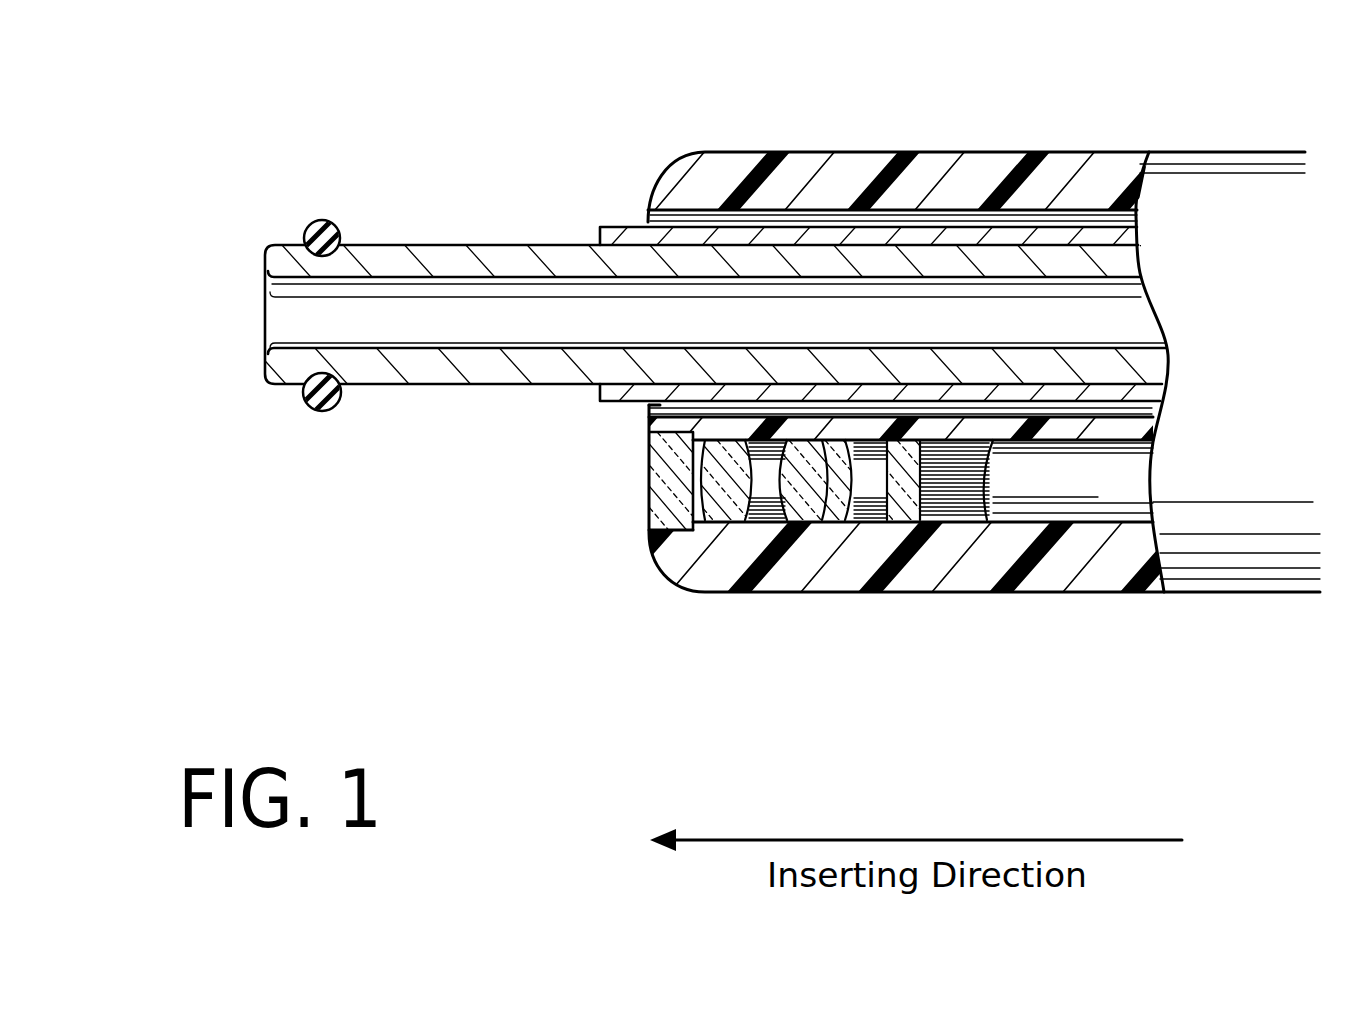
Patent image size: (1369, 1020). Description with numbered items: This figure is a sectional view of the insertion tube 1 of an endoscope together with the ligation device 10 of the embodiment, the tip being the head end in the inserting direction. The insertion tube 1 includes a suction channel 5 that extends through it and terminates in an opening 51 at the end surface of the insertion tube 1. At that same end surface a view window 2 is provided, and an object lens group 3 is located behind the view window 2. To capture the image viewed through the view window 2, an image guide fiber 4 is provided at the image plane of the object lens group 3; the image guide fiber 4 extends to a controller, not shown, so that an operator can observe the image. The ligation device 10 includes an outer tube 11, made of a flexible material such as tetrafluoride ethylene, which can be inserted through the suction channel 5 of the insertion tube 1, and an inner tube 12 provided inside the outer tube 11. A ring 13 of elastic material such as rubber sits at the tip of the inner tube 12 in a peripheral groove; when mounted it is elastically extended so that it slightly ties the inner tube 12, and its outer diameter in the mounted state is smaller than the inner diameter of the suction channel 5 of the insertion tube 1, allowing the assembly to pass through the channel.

The insertion tube 1 is at (1087, 152).
The view window 2 is at (670, 490).
The object lens group 3 is at (802, 497).
The image guide fiber 4 is at (958, 490).
The suction channel 5 is at (937, 213).
The ligation device 10 is at (500, 127).
The outer tube 11 is at (617, 227).
The inner tube 12 is at (457, 245).
The ring 13 is at (323, 220).
The opening 51 is at (648, 407).